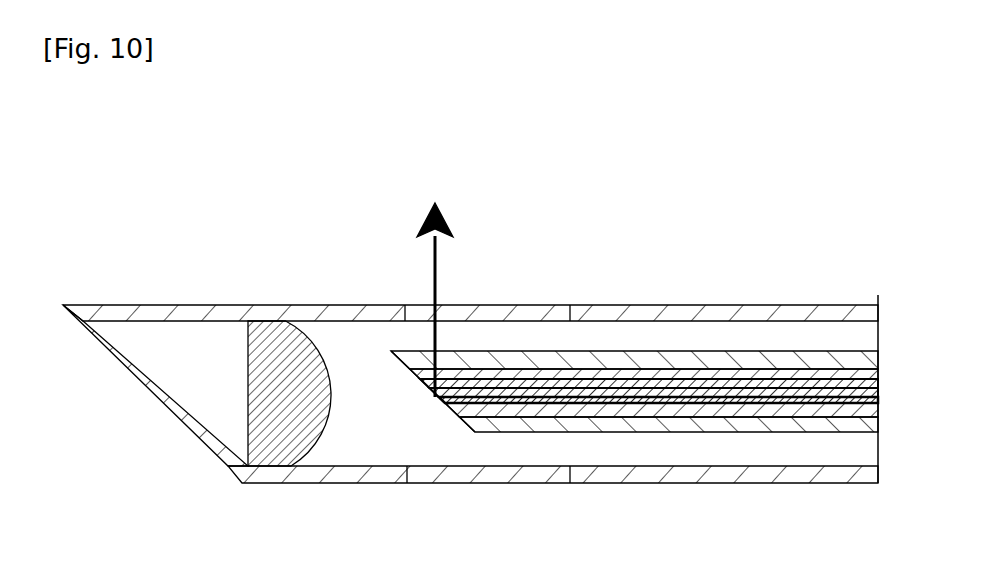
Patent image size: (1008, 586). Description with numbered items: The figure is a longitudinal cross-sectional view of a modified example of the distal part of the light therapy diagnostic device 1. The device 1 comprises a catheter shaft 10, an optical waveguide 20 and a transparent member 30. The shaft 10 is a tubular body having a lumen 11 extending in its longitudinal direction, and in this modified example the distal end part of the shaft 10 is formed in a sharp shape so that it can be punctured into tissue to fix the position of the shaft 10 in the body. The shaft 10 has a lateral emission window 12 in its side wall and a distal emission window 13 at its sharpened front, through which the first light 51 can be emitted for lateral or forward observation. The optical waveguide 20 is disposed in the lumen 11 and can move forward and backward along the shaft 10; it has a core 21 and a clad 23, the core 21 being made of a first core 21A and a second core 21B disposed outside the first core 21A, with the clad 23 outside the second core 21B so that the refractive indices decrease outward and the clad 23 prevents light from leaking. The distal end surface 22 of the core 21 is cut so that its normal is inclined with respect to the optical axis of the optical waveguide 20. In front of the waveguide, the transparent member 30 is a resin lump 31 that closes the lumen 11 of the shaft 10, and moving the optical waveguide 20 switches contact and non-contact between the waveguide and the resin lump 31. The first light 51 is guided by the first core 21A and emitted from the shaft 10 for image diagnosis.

The light therapy diagnostic device 1 is at (163, 243).
The catheter shaft 10 is at (305, 313).
The lumen 11 is at (376, 439).
The lateral emission window 12 is at (527, 307).
The distal emission window 13 is at (215, 450).
The optical waveguide 20 is at (708, 202).
The core 21 is at (675, 257).
The first core 21A is at (670, 385).
The second core 21B is at (732, 377).
The distal end surface 22 is at (448, 403).
The clad 23 is at (799, 360).
The transparent member 30 is at (263, 332).
The resin lump 31 is at (289, 393).
The first light 51 is at (433, 278).